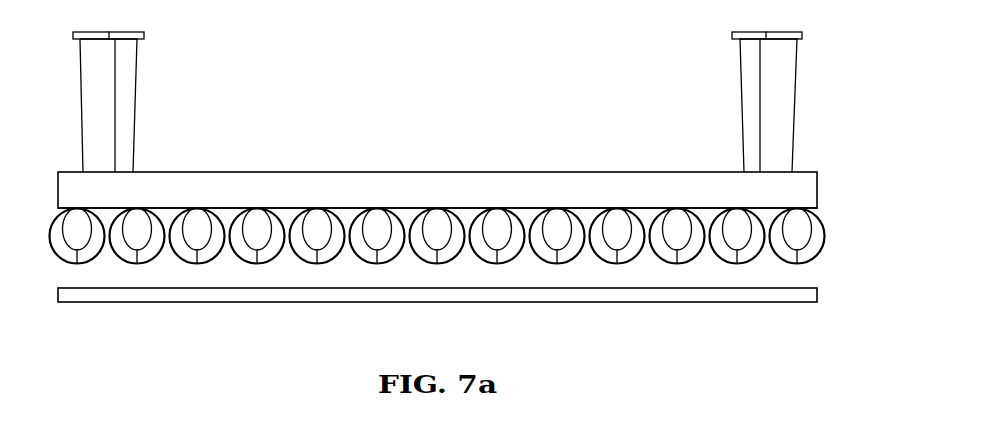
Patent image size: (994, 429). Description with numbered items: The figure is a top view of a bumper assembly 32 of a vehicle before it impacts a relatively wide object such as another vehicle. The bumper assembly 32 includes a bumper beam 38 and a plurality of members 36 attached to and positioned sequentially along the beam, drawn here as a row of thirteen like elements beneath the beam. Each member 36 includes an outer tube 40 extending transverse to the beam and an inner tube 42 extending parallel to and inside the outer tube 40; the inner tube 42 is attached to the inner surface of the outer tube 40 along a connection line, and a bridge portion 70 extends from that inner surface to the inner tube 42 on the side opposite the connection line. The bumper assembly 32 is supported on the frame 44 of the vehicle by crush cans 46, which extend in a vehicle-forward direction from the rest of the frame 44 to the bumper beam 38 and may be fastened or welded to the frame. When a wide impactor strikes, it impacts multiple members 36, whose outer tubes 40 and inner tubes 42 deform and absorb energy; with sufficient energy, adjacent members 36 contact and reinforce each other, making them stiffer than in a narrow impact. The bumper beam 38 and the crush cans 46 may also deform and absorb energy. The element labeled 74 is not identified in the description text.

The bumper assembly 32 is at (50, 200).
The members 36 is at (688, 263).
The bumper beam 38 is at (342, 172).
The outer tube 40 is at (518, 222).
The inner tube 42 is at (643, 208).
The frame 44 is at (80, 104).
The crush cans 46 is at (137, 88).
The bridge portion 70 is at (487, 258).
The bottom plate 74 is at (143, 303).